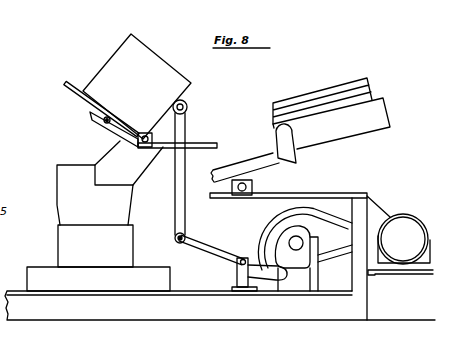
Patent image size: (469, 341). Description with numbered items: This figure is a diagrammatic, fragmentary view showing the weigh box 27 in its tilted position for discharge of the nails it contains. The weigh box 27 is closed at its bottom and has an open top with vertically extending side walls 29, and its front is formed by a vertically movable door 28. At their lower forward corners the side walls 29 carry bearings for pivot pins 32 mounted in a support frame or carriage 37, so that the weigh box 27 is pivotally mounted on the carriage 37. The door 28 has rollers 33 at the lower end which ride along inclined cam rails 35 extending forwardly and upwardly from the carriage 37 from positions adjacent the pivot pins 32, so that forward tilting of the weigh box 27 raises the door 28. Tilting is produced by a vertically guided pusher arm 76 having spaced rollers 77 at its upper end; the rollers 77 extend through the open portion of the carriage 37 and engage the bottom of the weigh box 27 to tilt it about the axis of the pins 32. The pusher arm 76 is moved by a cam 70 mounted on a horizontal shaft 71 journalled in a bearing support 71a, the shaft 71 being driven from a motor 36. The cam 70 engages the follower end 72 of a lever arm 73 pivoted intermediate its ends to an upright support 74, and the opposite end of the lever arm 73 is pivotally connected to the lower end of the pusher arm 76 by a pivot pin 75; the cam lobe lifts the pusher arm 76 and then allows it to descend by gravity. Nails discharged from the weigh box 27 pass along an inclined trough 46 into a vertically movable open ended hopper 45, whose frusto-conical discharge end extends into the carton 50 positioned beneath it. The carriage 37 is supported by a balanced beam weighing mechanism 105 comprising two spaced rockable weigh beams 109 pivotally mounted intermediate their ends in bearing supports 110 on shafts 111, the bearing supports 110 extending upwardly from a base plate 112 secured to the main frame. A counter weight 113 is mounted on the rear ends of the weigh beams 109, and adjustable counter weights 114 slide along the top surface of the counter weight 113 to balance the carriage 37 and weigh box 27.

The weigh box 27 is at (151, 48).
The side walls 29 is at (146, 80).
The front wall or door 28 is at (68, 91).
The rollers 33 is at (109, 118).
The pivot pins 32 is at (143, 132).
The cam rails 35 is at (97, 124).
The rollers 77 is at (188, 106).
The support frame or carriage 37 is at (203, 149).
The inclined trough 46 is at (126, 171).
The hopper 45 is at (102, 213).
The container or carton 50 is at (100, 255).
The pusher arm 76 is at (175, 197).
The pivot pin 75 is at (185, 236).
The lever arm 73 is at (223, 253).
The upright support 74 is at (236, 277).
The follower end 72 is at (290, 281).
The shaft 71 is at (303, 241).
The cam 70 is at (311, 256).
The bearing support 71a is at (322, 283).
The motor 36 is at (411, 245).
The base plate 112 is at (340, 194).
The bearing supports 110 is at (253, 183).
The shafts 111 is at (240, 192).
The weigh beams 109 is at (250, 160).
The weighing mechanism 105 is at (286, 162).
The counter weight 113 is at (389, 110).
The counter weights 114 is at (372, 89).